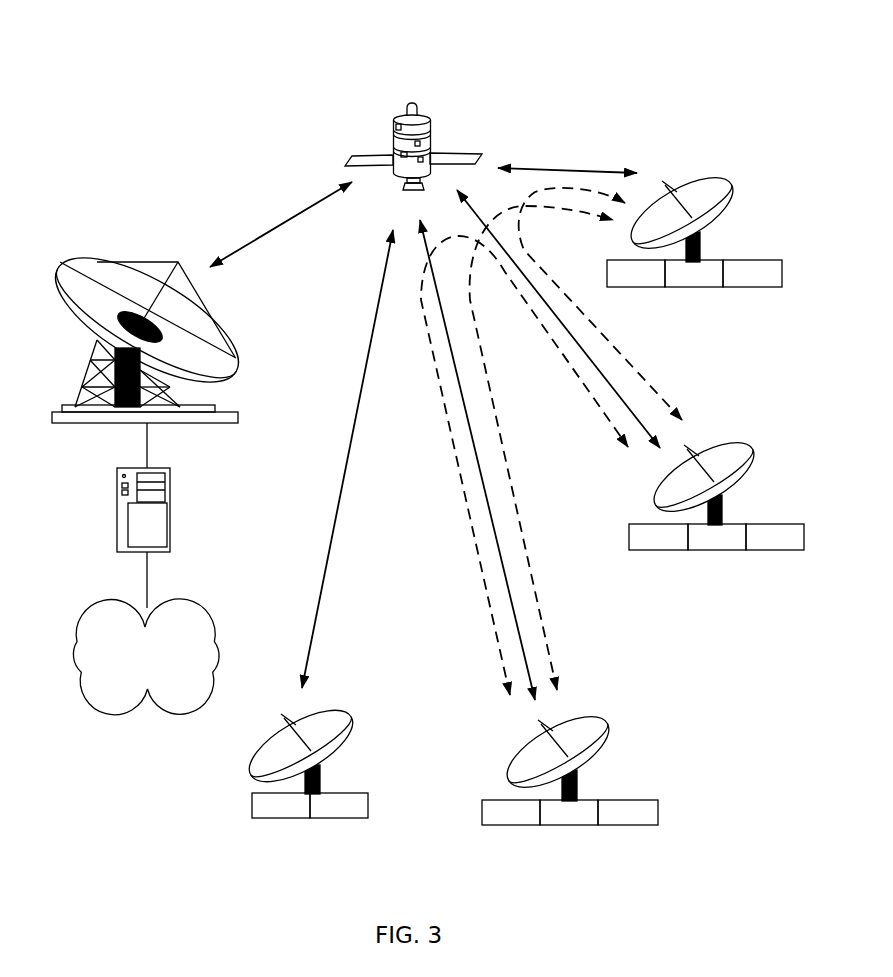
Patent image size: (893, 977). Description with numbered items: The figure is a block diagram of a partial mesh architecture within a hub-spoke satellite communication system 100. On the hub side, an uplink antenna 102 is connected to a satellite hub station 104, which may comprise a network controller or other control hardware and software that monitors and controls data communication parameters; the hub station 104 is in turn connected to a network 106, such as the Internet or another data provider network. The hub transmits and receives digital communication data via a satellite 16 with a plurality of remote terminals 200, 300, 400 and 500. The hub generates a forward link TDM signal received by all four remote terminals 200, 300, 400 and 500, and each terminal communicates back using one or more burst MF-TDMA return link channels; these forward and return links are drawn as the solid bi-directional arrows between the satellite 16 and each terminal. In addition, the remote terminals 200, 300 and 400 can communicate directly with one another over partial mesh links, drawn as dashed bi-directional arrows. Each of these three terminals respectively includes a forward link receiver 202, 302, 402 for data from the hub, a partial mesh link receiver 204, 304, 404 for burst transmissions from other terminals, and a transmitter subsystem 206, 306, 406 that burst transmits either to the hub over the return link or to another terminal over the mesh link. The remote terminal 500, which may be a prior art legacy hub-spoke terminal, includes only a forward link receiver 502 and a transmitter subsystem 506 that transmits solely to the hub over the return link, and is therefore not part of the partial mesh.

The satellite communication system 100 is at (238, 122).
The satellite 16 is at (422, 118).
The uplink antenna 102 is at (80, 262).
The satellite hub station 104 is at (118, 498).
The network 106 is at (72, 613).
The remote terminal 200 is at (727, 180).
The forward link receiver 202 is at (637, 287).
The partial mesh link receiver 204 is at (695, 287).
The transmitter subsystem 206 is at (753, 287).
The remote terminal 300 is at (748, 443).
The forward link receiver 302 is at (660, 550).
The partial mesh link receiver 304 is at (717, 550).
The transmitter subsystem 306 is at (775, 550).
The remote terminal 400 is at (607, 720).
The forward link receiver 402 is at (510, 825).
The partial mesh link receiver 404 is at (568, 825).
The transmitter subsystem 406 is at (628, 825).
The remote terminal 500 is at (347, 713).
The forward link receiver 502 is at (280, 820).
The transmitter subsystem 506 is at (338, 820).